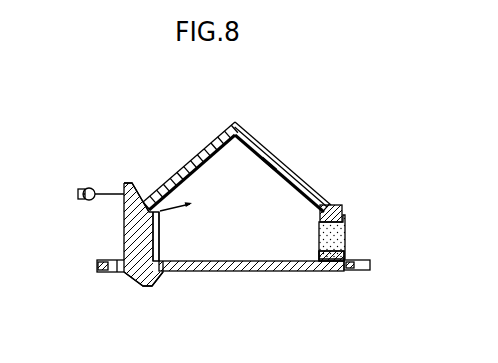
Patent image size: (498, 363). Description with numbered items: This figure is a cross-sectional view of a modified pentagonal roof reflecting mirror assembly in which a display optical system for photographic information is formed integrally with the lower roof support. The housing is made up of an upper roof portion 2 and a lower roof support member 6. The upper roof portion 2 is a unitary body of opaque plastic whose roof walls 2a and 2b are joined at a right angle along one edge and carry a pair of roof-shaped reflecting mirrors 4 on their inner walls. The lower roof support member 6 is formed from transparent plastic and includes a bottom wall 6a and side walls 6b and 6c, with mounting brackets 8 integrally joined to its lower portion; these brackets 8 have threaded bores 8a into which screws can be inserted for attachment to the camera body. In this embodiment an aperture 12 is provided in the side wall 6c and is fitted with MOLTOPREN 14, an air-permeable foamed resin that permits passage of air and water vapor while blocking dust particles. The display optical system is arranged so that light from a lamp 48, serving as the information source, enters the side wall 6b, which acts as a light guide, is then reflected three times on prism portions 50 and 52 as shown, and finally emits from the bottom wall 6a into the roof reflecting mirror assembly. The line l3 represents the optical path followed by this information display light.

The upper roof portion 2 is at (242, 148).
The roof wall 2a is at (283, 165).
The roof wall 2b is at (196, 157).
The roof-shaped reflecting mirror 4 is at (271, 167).
The lower roof support member 6 is at (238, 228).
The bottom wall 6a is at (219, 268).
The side wall 6b is at (142, 228).
The side wall 6c is at (325, 262).
The mounting bracket 8 is at (97, 270).
The threaded bore 8a is at (112, 271).
The aperture 12 is at (318, 238).
The MOLTOPREN 14 is at (347, 233).
The lamp 48 is at (85, 189).
The prism portion 50 is at (128, 183).
The prism portion 52 is at (160, 287).
The line l3 is at (159, 217).